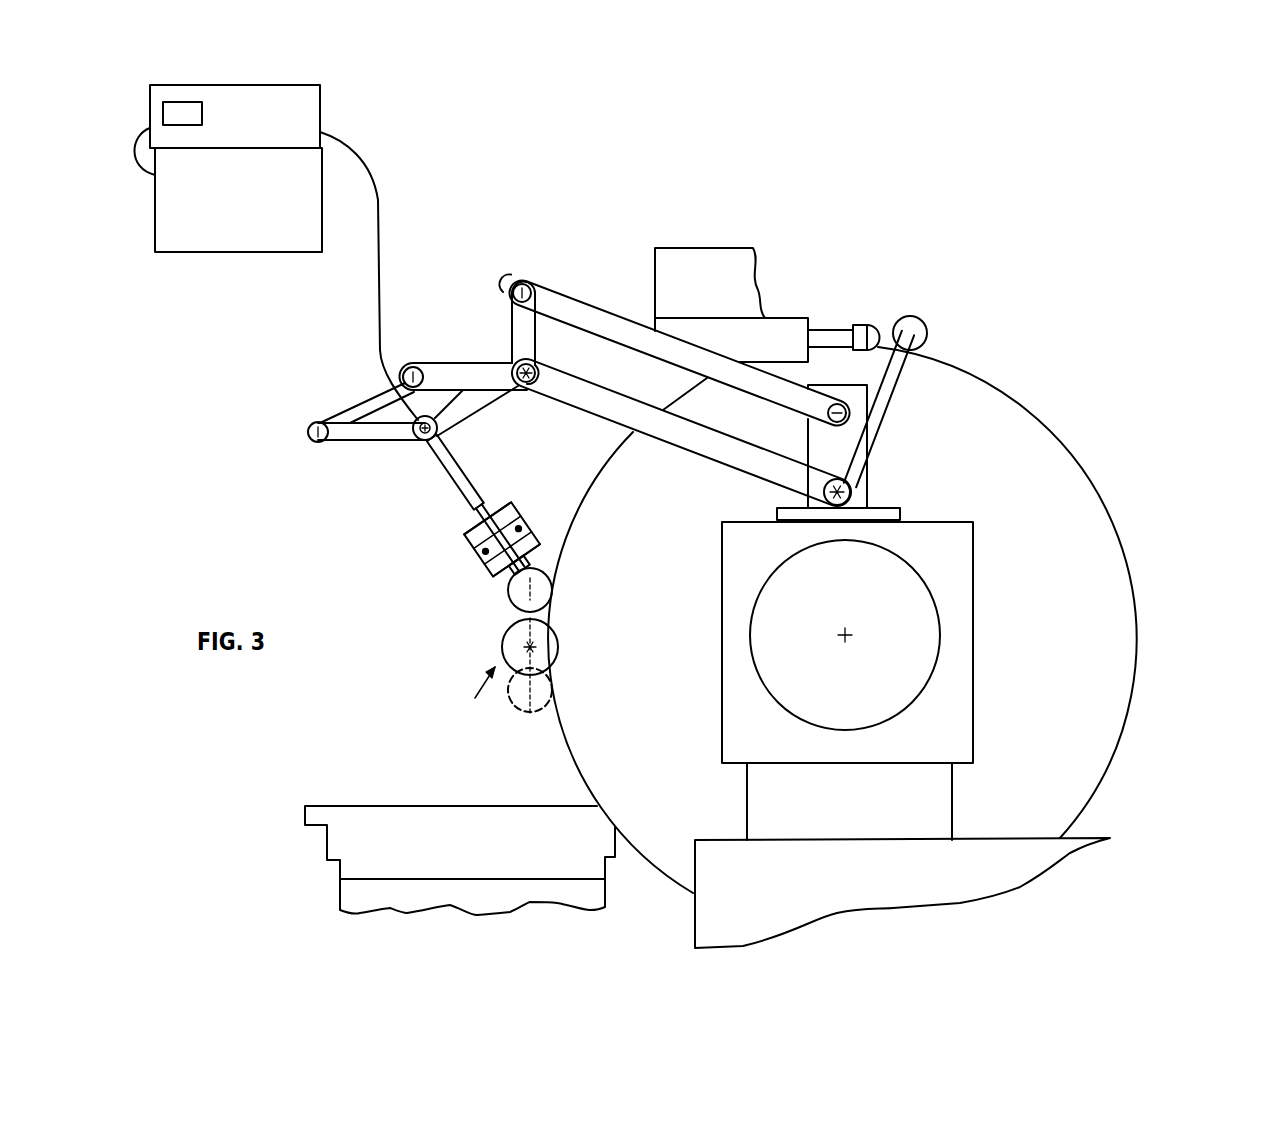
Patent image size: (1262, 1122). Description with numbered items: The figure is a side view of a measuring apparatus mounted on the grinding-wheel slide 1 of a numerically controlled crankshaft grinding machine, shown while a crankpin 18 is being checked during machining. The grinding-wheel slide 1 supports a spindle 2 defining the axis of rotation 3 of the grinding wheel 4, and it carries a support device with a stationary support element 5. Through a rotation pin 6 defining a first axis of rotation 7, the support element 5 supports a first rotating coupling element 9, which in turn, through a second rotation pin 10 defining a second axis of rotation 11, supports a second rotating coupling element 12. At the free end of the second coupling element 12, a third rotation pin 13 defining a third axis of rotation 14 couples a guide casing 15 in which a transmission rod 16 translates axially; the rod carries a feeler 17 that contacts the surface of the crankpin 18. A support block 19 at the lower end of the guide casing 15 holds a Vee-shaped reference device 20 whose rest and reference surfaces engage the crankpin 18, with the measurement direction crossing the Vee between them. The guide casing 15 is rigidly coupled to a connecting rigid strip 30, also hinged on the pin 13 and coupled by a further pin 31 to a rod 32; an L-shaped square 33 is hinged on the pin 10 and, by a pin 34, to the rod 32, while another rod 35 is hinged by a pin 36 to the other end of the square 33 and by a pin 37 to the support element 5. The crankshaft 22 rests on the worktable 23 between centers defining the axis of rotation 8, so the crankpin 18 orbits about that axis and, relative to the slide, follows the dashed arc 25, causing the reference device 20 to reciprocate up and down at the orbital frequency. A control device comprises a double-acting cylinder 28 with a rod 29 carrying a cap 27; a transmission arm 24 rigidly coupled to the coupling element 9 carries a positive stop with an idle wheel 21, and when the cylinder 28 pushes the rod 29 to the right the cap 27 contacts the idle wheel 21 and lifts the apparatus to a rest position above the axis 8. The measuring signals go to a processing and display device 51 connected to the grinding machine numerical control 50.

The grinding-wheel slide 1 is at (940, 720).
The spindle 2 is at (908, 663).
The axis of rotation 3 is at (852, 628).
The grinding wheel 4 is at (1052, 518).
The stationary support element 5 is at (862, 500).
The rotation pin 6 is at (862, 460).
The first axis of rotation 7 is at (855, 422).
The axis of rotation 8 is at (508, 673).
The first rotating coupling element 9 is at (570, 392).
The second rotation pin 10 is at (527, 390).
The second axis of rotation 11 is at (517, 393).
The second rotating coupling element 12 is at (458, 412).
The third rotation pin 13 is at (425, 445).
The third axis of rotation 14 is at (420, 440).
The guide casing 15 is at (462, 485).
The transmission rod 16 is at (517, 520).
The feeler 17 is at (500, 570).
The crankpin 18 is at (520, 595).
The support block 19 is at (500, 512).
The Vee-shaped reference device 20 is at (500, 583).
The idle wheel 21 is at (921, 330).
The crankshaft 22 is at (475, 692).
The worktable 23 is at (400, 822).
The transmission arm 24 is at (850, 405).
The arc 25 is at (530, 623).
The cap 27 is at (866, 328).
The double-acting cylinder 28 is at (770, 333).
The rod 29 is at (822, 335).
The connecting rigid strip 30 is at (362, 434).
The pin 31 is at (313, 443).
The rod 32 is at (360, 408).
The square 33 is at (495, 378).
The pin 34 is at (413, 367).
The rod 35 is at (590, 322).
The pin 36 is at (524, 283).
The pin 37 is at (870, 480).
The grinding machine numerical control 50 is at (237, 232).
The processing and display device 51 is at (300, 110).